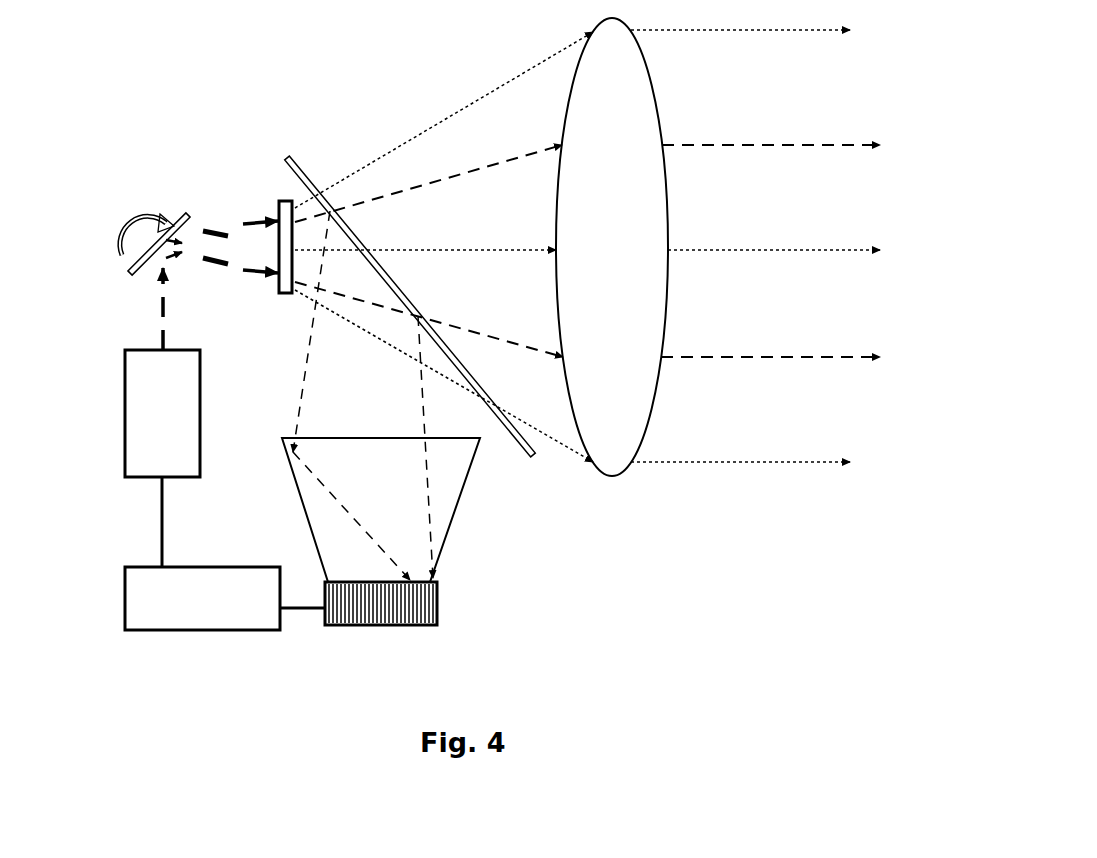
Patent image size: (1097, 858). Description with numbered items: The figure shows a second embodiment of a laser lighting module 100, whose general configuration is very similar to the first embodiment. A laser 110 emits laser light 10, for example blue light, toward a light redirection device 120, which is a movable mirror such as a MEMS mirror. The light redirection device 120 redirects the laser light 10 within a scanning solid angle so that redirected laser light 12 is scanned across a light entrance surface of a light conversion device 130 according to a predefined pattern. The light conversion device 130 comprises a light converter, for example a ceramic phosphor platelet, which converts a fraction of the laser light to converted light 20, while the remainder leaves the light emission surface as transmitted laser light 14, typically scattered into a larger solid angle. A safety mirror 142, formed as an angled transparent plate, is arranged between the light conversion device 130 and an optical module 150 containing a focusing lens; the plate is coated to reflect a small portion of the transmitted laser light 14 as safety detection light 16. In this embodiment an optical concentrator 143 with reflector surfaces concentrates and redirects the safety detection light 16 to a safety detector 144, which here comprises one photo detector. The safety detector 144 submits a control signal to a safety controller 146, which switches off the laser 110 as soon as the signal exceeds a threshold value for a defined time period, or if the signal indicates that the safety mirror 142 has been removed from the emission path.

The laser lighting module 100 is at (140, 62).
The laser light 10 is at (160, 322).
The redirected laser light 12 is at (216, 226).
The transmitted laser light 14 is at (801, 144).
The safety detection light 16 is at (302, 397).
The converted light 20 is at (808, 253).
The laser 110 is at (123, 415).
The light redirection device 120 is at (186, 212).
The light conversion device 130 is at (288, 297).
The safety mirror 142 is at (289, 150).
The optical concentrator 143 is at (307, 513).
The safety detector 144 is at (437, 604).
The safety controller 146 is at (123, 594).
The optical module 150 is at (612, 478).